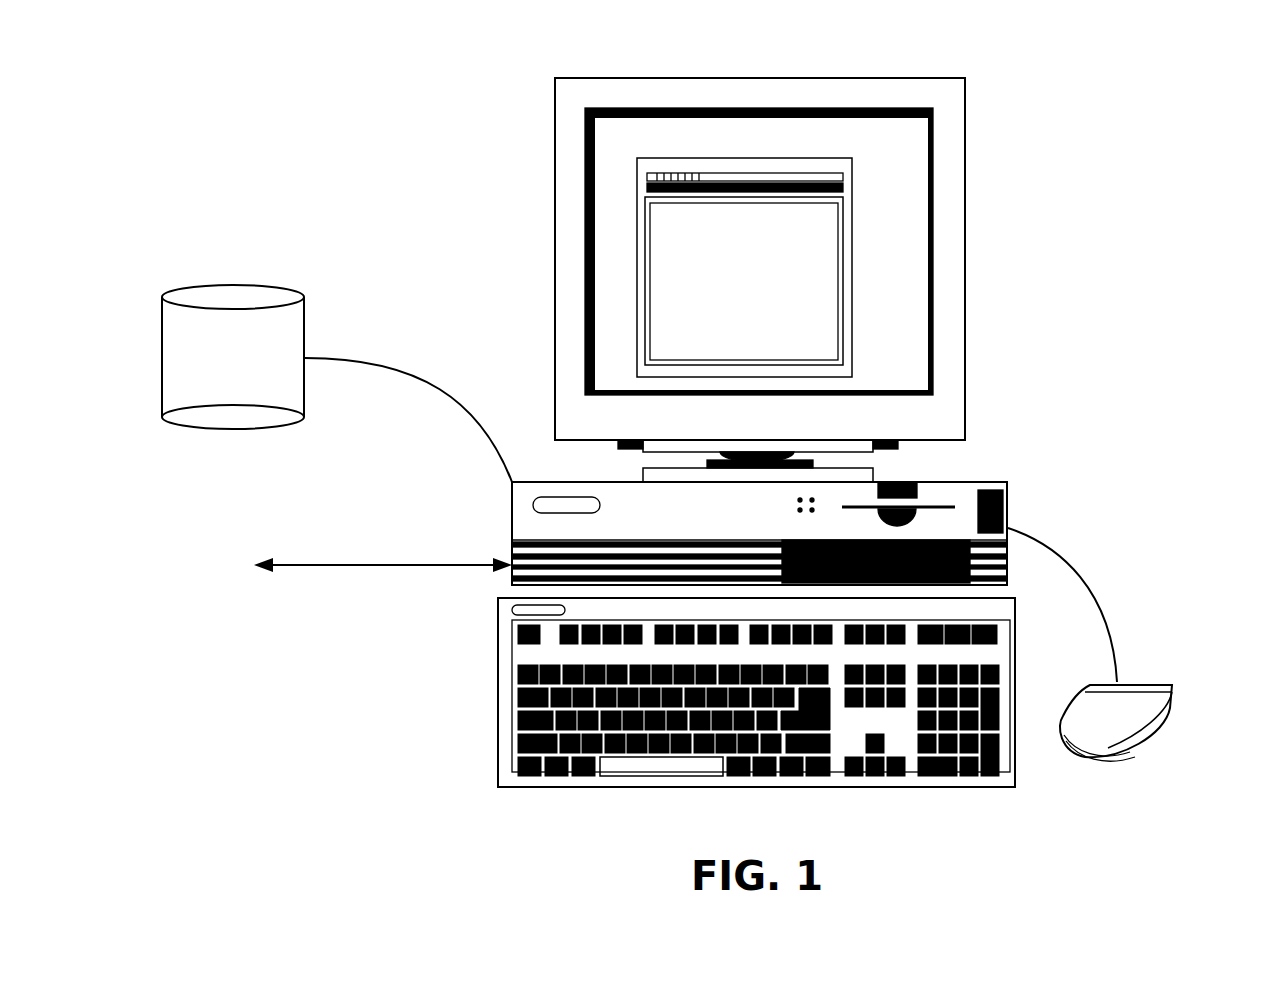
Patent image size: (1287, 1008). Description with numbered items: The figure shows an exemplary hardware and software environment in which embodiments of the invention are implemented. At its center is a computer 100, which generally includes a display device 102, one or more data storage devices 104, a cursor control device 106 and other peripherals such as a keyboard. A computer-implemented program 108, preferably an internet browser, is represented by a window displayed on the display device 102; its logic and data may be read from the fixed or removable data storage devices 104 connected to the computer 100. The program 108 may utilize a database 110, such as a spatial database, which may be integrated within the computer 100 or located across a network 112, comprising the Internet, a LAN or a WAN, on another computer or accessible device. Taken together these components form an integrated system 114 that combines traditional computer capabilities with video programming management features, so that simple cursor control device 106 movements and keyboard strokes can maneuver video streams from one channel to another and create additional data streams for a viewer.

The computer 100 is at (1020, 500).
The display device 102 is at (970, 110).
The data storage device 104 is at (940, 497).
The cursor control device 106 is at (1146, 752).
The program 108 is at (856, 260).
The database 110 is at (337, 389).
The network 112 is at (324, 566).
The integrated system 114 is at (474, 118).